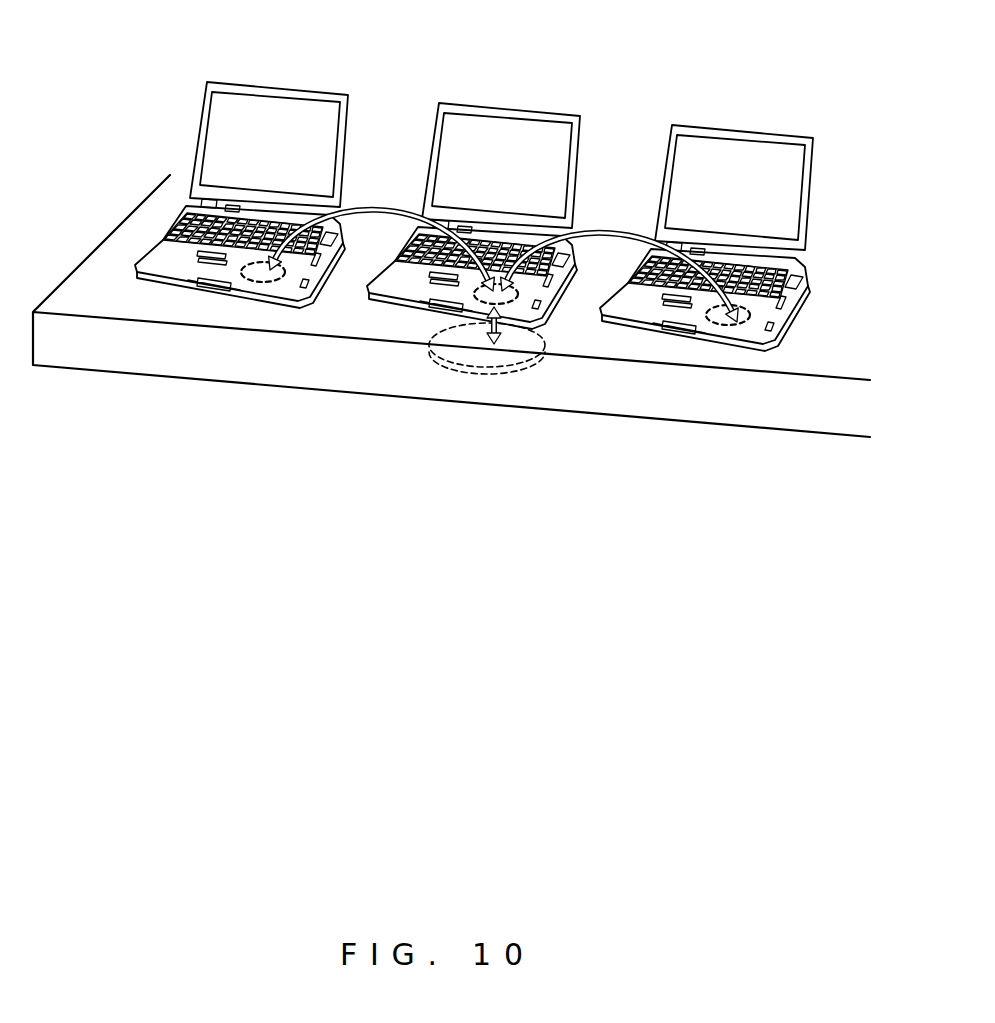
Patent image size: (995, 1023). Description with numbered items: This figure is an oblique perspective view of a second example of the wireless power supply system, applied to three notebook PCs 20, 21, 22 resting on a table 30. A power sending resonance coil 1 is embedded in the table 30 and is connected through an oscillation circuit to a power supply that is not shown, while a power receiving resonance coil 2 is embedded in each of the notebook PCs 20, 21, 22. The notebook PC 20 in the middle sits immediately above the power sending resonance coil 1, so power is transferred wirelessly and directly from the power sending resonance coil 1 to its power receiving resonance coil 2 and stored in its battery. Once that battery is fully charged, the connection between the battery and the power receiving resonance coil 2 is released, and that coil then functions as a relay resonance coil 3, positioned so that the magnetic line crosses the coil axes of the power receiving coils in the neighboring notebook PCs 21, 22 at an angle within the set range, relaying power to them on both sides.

The power sending resonance coil 1 is at (453, 364).
The power receiving resonance coil 2 is at (263, 283).
The relay resonance coil 3 is at (538, 318).
The notebook PC 20 is at (517, 107).
The notebook PC 21 is at (274, 84).
The notebook PC 22 is at (735, 125).
The table 30 is at (163, 378).